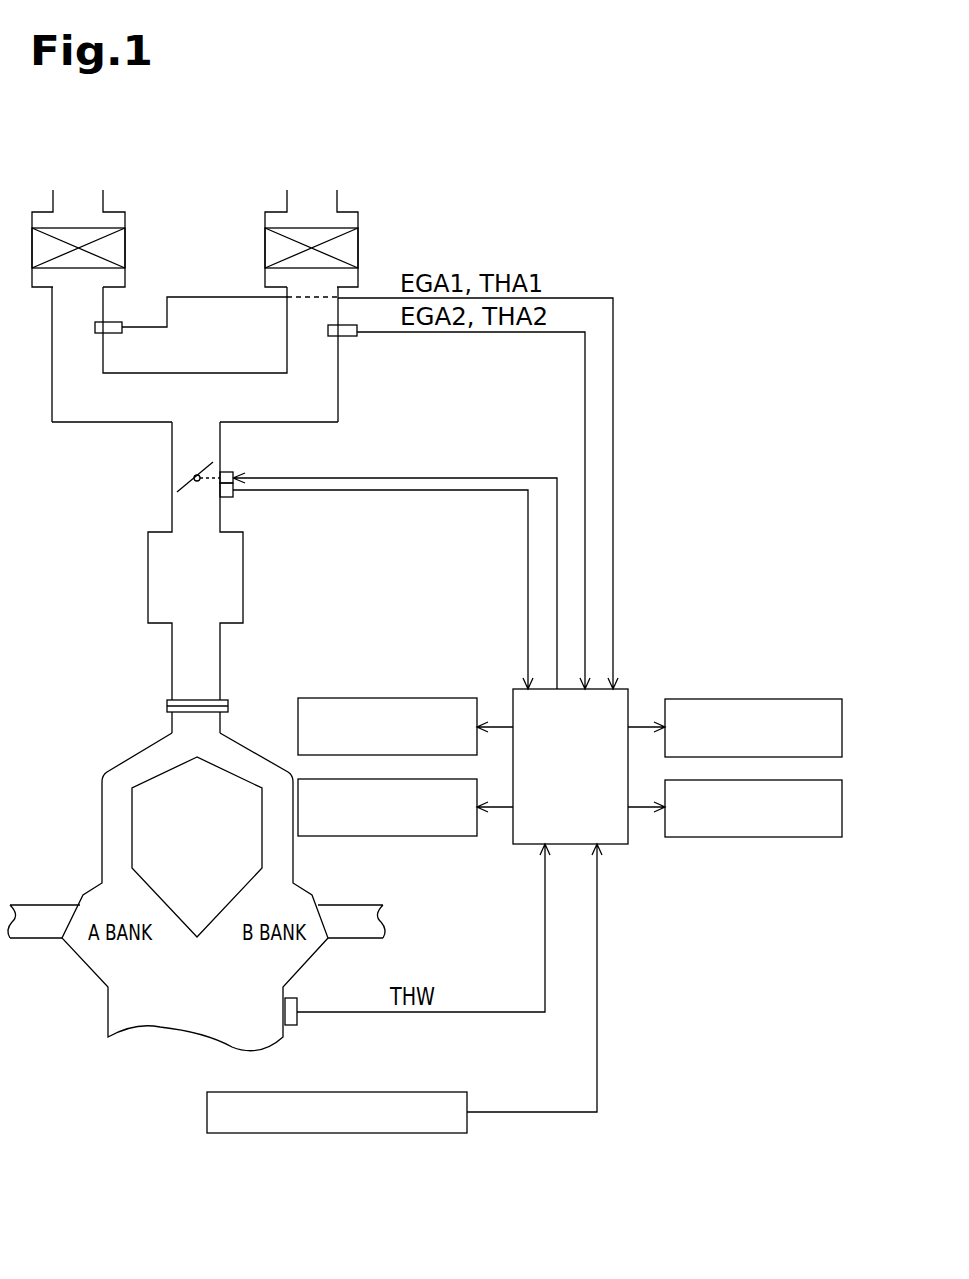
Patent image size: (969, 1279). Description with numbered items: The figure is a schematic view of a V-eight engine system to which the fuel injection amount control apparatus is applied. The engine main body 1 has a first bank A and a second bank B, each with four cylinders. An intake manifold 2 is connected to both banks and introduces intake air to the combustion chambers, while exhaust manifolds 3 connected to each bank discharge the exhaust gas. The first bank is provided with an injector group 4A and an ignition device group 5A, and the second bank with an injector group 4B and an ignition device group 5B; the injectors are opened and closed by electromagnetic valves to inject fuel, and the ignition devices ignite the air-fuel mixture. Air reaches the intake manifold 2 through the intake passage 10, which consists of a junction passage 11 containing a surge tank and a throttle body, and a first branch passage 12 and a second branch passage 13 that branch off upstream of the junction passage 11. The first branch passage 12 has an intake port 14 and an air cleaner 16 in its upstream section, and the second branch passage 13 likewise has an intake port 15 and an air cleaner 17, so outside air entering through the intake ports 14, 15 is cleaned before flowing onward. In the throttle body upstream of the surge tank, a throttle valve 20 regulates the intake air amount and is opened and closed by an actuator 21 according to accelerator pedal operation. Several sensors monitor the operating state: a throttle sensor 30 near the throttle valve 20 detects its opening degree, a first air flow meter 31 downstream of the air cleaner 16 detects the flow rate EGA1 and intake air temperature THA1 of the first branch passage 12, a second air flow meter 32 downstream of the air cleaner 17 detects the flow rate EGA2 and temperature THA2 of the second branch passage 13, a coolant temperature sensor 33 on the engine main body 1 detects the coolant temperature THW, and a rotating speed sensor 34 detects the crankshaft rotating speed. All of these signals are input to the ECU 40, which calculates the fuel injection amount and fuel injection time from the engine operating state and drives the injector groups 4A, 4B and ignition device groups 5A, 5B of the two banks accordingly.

The engine main body 1 is at (84, 1043).
The intake manifold 2 is at (197, 758).
The exhaust manifold 3 is at (32, 940).
The injector group for the first bank 4A is at (412, 697).
The injector group for the second bank 4B is at (724, 697).
The ignition device group for the first bank 5A is at (412, 837).
The ignition device group for the second bank 5B is at (727, 838).
The intake passage 10 is at (111, 568).
The junction passage 11 is at (172, 478).
The first branch passage 12 is at (77, 422).
The second branch passage 13 is at (338, 403).
The intake port 14 is at (103, 197).
The intake port 15 is at (337, 197).
The air cleaner 16 is at (125, 228).
The air cleaner 17 is at (265, 228).
The throttle valve 20 is at (196, 475).
The actuator 21 is at (225, 470).
The throttle sensor 30 is at (233, 497).
The first air flow meter 31 is at (115, 333).
The second air flow meter 32 is at (347, 336).
The coolant temperature sensor 33 is at (293, 1027).
The rotating speed sensor 34 is at (362, 1135).
The ECU 40 is at (616, 846).